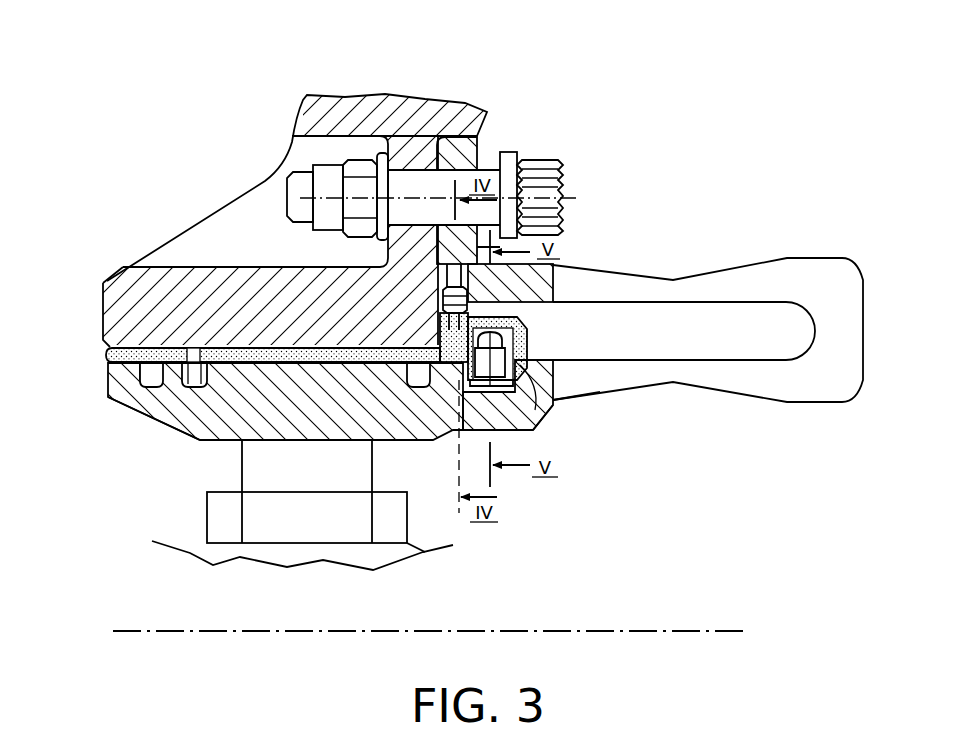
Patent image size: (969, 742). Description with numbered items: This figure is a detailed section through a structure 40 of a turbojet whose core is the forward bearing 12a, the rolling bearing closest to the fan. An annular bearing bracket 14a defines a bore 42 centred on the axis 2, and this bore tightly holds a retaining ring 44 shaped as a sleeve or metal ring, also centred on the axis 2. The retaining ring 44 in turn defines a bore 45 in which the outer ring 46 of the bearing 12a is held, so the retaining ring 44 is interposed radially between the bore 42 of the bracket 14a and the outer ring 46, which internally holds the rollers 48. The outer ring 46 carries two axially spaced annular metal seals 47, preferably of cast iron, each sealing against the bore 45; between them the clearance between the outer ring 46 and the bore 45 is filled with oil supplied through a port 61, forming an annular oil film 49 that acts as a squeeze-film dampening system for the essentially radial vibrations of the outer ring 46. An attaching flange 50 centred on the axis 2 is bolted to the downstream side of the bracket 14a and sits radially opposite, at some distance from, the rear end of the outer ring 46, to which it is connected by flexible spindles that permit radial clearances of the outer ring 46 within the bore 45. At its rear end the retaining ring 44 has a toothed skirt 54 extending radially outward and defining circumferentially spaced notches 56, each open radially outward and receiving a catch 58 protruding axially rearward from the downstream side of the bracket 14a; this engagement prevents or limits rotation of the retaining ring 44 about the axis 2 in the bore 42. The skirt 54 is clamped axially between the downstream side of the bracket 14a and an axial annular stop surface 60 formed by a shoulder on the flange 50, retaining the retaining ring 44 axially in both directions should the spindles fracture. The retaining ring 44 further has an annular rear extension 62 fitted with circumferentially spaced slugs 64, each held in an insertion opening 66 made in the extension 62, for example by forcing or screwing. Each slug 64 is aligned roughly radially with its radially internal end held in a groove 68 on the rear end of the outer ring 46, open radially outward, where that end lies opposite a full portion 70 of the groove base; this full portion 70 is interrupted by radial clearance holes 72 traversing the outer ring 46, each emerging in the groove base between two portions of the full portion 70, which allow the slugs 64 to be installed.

The axis 2 is at (761, 629).
The forward bearing 12a is at (446, 542).
The annular bearing bracket 14a is at (418, 126).
The structure 40 is at (238, 126).
The bore 42 is at (106, 350).
The retaining ring 44 is at (136, 365).
The bore 45 is at (320, 432).
The outer ring 46 is at (194, 427).
The annular metal seals 47 is at (153, 380).
The rollers 48 is at (267, 478).
The annular oil film 49 is at (247, 344).
The attaching flange 50 is at (465, 149).
The skirt 54 is at (441, 306).
The notches 56 is at (528, 329).
The catch 58 is at (440, 291).
The axial annular stop surface 60 is at (663, 346).
The port 61 is at (197, 375).
The annular rear extension 62 is at (530, 339).
The slugs 64 is at (464, 390).
The insertion opening 66 is at (441, 333).
The groove 68 is at (553, 406).
The full portion 70 is at (535, 407).
The radial clearance holes 72 is at (457, 445).